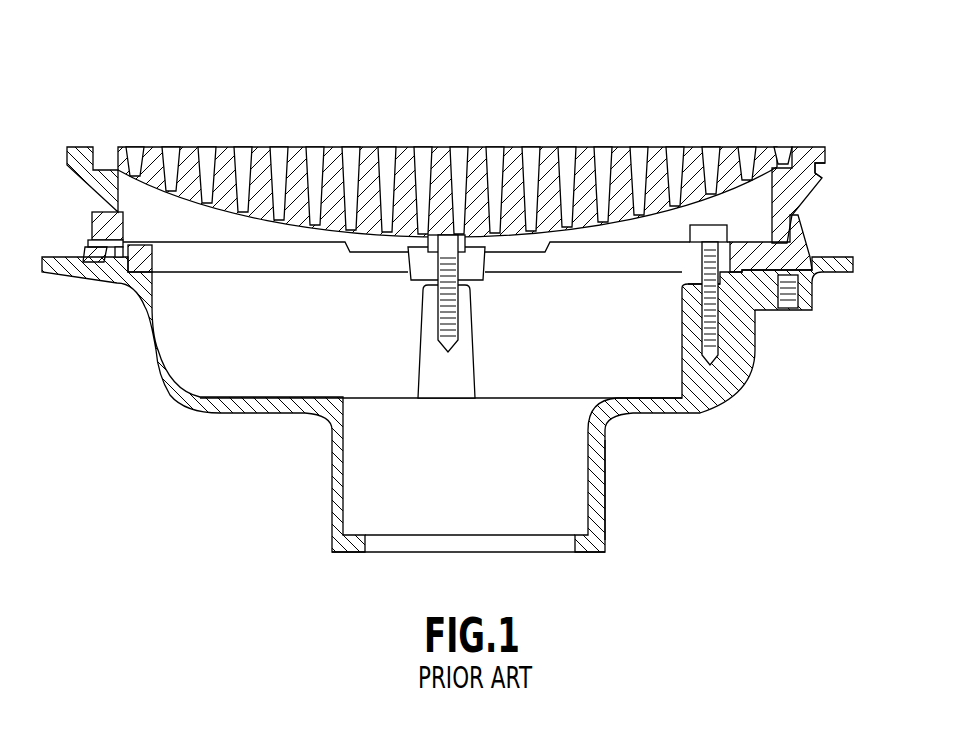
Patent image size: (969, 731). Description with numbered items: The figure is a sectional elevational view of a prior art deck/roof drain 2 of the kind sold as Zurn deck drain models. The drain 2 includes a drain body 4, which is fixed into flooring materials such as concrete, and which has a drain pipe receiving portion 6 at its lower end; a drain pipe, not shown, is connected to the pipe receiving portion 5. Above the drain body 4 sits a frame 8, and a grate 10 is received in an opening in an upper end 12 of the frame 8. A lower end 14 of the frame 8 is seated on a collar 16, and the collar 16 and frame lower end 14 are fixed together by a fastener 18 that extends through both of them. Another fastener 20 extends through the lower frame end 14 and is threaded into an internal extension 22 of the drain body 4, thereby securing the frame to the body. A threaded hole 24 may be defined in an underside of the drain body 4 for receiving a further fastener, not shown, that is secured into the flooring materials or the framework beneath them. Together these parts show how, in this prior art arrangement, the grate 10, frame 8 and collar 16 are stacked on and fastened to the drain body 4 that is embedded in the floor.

The drain 2 is at (662, 88).
The drain body 4 is at (737, 392).
The pipe receiving portion 5 is at (365, 535).
The drain pipe receiving portion 6 is at (606, 516).
The frame 8 is at (823, 170).
The grate 10 is at (778, 147).
The upper end 12 is at (65, 160).
The lower end 14 is at (800, 188).
The collar 16 is at (803, 240).
The fastener 18 is at (92, 238).
The fastener 20 is at (698, 290).
The internal extension 22 is at (682, 348).
The threaded hole 24 is at (790, 306).